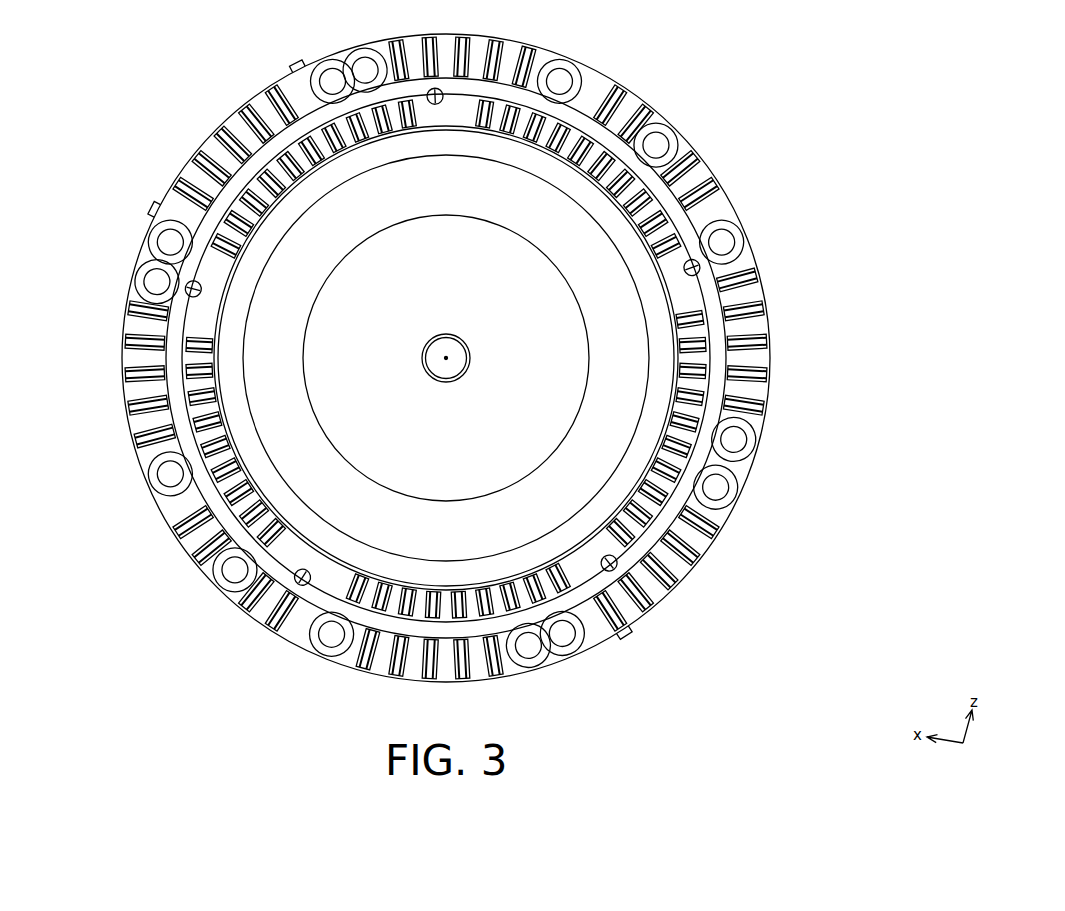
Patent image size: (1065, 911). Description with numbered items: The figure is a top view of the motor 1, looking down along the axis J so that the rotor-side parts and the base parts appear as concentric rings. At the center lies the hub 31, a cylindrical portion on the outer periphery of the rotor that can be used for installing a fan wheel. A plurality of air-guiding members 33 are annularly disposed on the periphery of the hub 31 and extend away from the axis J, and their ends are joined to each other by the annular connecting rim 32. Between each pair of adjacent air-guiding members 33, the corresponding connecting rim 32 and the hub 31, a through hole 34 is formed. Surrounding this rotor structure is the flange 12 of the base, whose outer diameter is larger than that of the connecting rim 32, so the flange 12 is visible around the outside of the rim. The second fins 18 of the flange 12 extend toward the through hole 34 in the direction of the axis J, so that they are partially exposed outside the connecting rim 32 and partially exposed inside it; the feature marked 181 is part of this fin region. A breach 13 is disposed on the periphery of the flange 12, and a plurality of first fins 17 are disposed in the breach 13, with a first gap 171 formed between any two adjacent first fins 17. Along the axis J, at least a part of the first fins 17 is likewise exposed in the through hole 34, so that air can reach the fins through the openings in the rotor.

The motor 1 is at (1046, 68).
The flange 12 is at (760, 215).
The breach 13 is at (665, 630).
The first fins 17 is at (655, 524).
The first gap 171 is at (637, 540).
The second fins 18 is at (740, 375).
The coil end 181 is at (745, 333).
The hub 31 is at (345, 200).
The connecting rim 32 is at (240, 187).
The air-guiding members 33 is at (178, 355).
The through hole 34 is at (197, 382).
The axis J is at (448, 357).